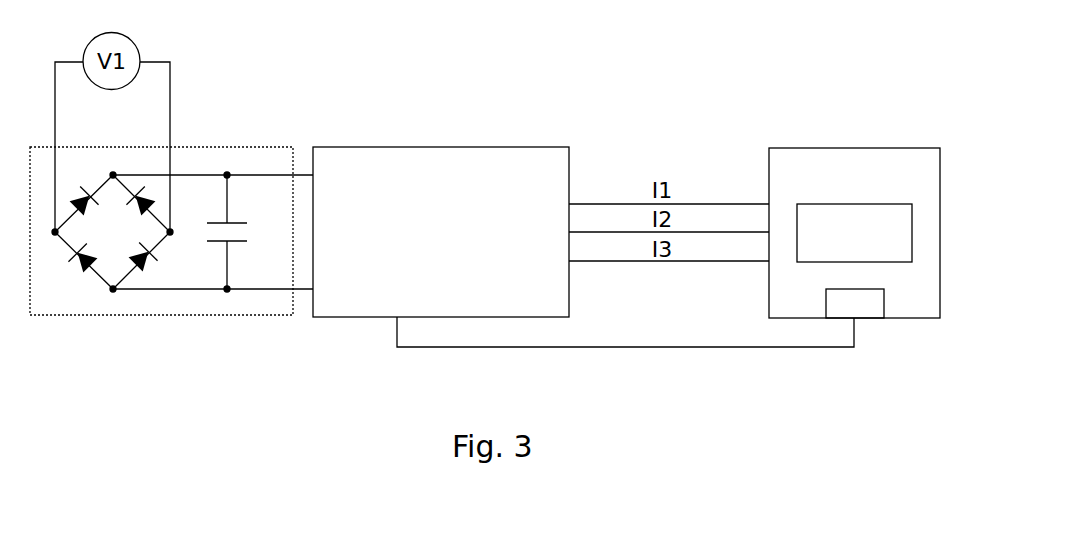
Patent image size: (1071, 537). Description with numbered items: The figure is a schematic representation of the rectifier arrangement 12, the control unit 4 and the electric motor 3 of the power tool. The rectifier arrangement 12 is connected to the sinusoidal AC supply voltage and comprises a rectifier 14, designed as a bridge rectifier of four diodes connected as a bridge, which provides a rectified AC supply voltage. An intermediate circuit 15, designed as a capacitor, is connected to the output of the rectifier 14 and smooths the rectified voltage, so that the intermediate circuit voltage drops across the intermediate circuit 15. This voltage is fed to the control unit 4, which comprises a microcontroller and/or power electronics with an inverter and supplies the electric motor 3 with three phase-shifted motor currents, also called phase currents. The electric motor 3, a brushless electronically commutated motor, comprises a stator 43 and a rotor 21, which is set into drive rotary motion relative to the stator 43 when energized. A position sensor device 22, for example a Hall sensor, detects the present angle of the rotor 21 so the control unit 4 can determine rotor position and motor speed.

The electric motor 3 is at (859, 173).
The control unit 4 is at (435, 245).
The rectifier arrangement 12 is at (171, 249).
The rectifier 14 is at (84, 295).
The intermediate circuit 15 is at (209, 253).
The rotor 21 is at (842, 246).
The position sensor device 22 is at (842, 316).
The stator 43 is at (802, 148).